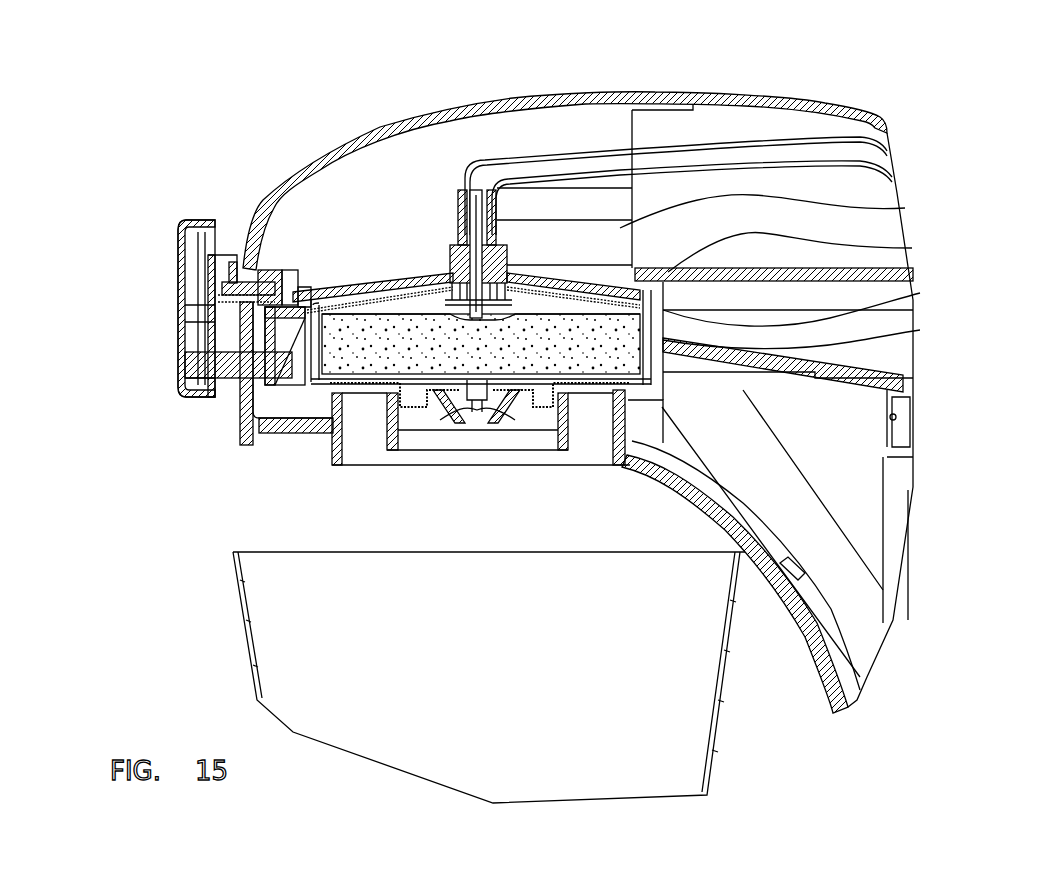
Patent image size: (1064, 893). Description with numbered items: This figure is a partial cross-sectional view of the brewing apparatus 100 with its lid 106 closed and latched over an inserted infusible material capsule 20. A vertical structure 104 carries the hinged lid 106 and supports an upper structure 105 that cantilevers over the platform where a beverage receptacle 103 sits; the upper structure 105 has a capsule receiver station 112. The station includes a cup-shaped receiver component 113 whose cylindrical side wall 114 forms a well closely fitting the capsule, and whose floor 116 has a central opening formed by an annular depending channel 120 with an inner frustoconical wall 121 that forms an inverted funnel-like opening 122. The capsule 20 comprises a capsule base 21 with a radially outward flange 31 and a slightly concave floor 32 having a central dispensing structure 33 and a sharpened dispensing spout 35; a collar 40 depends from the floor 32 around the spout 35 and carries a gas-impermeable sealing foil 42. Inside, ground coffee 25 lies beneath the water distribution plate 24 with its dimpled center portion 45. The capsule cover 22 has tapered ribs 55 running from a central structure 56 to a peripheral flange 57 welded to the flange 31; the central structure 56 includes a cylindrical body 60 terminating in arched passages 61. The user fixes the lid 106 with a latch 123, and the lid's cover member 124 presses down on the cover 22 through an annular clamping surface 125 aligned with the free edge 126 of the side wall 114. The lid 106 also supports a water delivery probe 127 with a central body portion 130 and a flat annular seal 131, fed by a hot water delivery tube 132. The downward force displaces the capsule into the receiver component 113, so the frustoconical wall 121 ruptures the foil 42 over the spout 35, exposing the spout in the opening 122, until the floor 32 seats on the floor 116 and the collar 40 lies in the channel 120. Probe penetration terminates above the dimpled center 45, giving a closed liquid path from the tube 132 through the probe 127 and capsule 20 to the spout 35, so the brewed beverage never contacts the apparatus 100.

The brewing apparatus 100 is at (952, 137).
The beverage receptacle 103 is at (242, 617).
The vertical structure 104 is at (905, 553).
The upper structure 105 is at (240, 392).
The lid 106 is at (592, 92).
The capsule receiver station 112 is at (277, 262).
The receiver component 113 is at (310, 333).
The cylindrical side wall 114 is at (258, 418).
The floor 116 is at (298, 388).
The annular depending channel 120 is at (362, 452).
The frustoconical wall 121 is at (503, 410).
The opening 122 is at (490, 415).
The latch 123 is at (175, 297).
The cover member 124 is at (412, 262).
The clamping surface 125 is at (457, 184).
The free edge 126 is at (915, 307).
The water delivery probe 127 is at (473, 195).
The central body portion 130 is at (537, 290).
The flat annular seal 131 is at (500, 290).
The hot water delivery tube 132 is at (665, 143).
The infusible material capsule 20 is at (387, 303).
The capsule base 21 is at (290, 405).
The capsule cover 22 is at (317, 272).
The water distribution plate 24 is at (356, 276).
The ground coffee 25 is at (491, 355).
The flange 31 is at (905, 337).
The floor 32 is at (600, 400).
The central dispensing structure 33 is at (466, 466).
The dispensing spout 35 is at (453, 405).
The collar 40 is at (387, 400).
The sealing foil 42 is at (400, 425).
The dimpled center portion 45 is at (912, 355).
The ribs 55 is at (905, 208).
The central structure 56 is at (433, 265).
The peripheral flange 57 is at (912, 249).
The cylindrical body 60 is at (545, 290).
The arched passages 61 is at (585, 282).